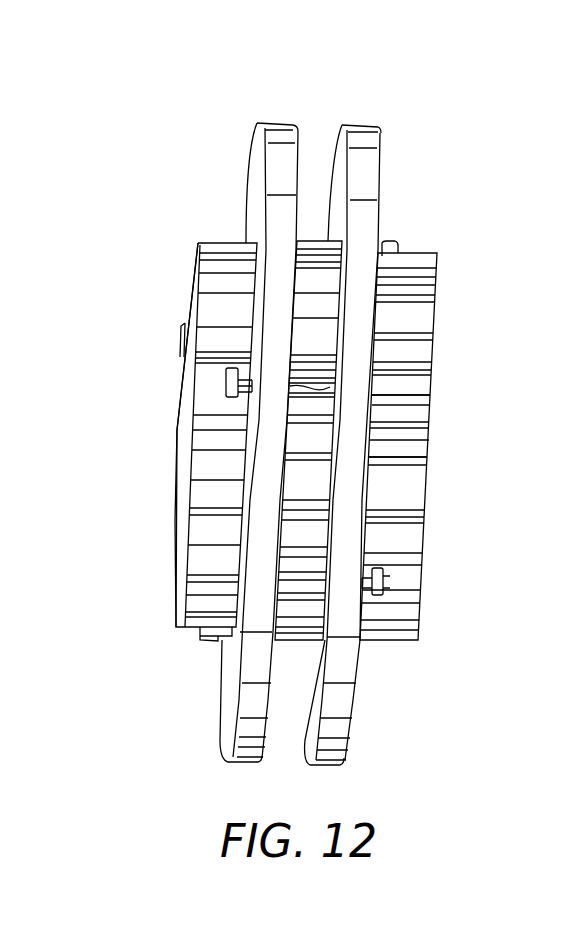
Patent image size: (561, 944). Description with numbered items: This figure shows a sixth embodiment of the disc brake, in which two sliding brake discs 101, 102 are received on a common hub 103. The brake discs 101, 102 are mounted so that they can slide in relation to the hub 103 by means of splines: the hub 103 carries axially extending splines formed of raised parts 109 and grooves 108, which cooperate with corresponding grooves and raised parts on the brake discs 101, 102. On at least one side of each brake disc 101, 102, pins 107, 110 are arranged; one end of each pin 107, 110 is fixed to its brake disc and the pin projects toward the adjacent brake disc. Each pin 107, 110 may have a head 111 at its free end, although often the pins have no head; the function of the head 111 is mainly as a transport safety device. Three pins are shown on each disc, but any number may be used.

The brake disc 101 is at (282, 127).
The brake disc 102 is at (368, 127).
The hub 103 is at (445, 305).
The pin 107 is at (303, 576).
The groove 108 is at (420, 402).
The raised part 109 is at (423, 447).
The pin 110 is at (290, 388).
The head 111 is at (385, 575).